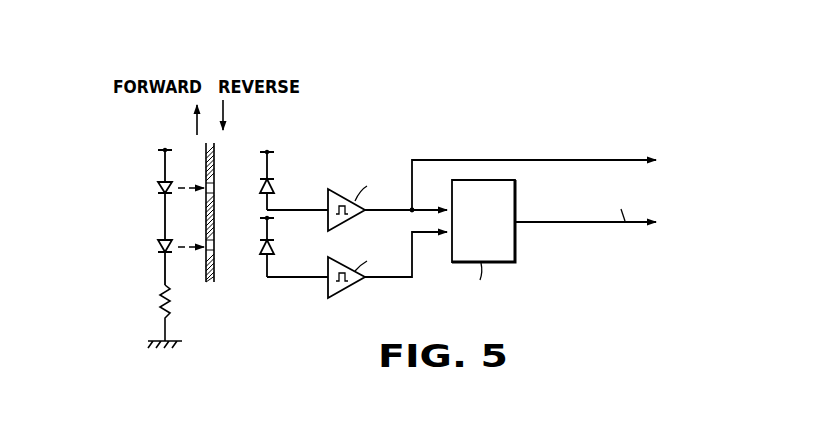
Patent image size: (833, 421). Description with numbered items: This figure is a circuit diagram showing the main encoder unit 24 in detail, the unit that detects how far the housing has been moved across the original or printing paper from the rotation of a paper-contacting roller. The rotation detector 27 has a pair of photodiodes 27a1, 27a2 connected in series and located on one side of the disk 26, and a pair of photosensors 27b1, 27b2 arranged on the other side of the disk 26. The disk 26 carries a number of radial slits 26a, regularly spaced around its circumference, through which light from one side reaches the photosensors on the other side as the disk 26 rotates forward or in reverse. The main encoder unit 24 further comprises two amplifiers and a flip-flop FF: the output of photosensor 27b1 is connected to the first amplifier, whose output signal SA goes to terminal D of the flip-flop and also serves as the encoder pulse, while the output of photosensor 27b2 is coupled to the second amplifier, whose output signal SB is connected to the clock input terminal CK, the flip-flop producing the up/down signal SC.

The main encoder unit 24 is at (413, 121).
The disk 26 is at (205, 283).
The slits 26a is at (213, 186).
The rotation detector 27 is at (237, 149).
The photodiode 27a1 is at (157, 185).
The photodiode 27a2 is at (157, 246).
The photosensor 27b1 is at (273, 190).
The photosensor 27b2 is at (276, 247).